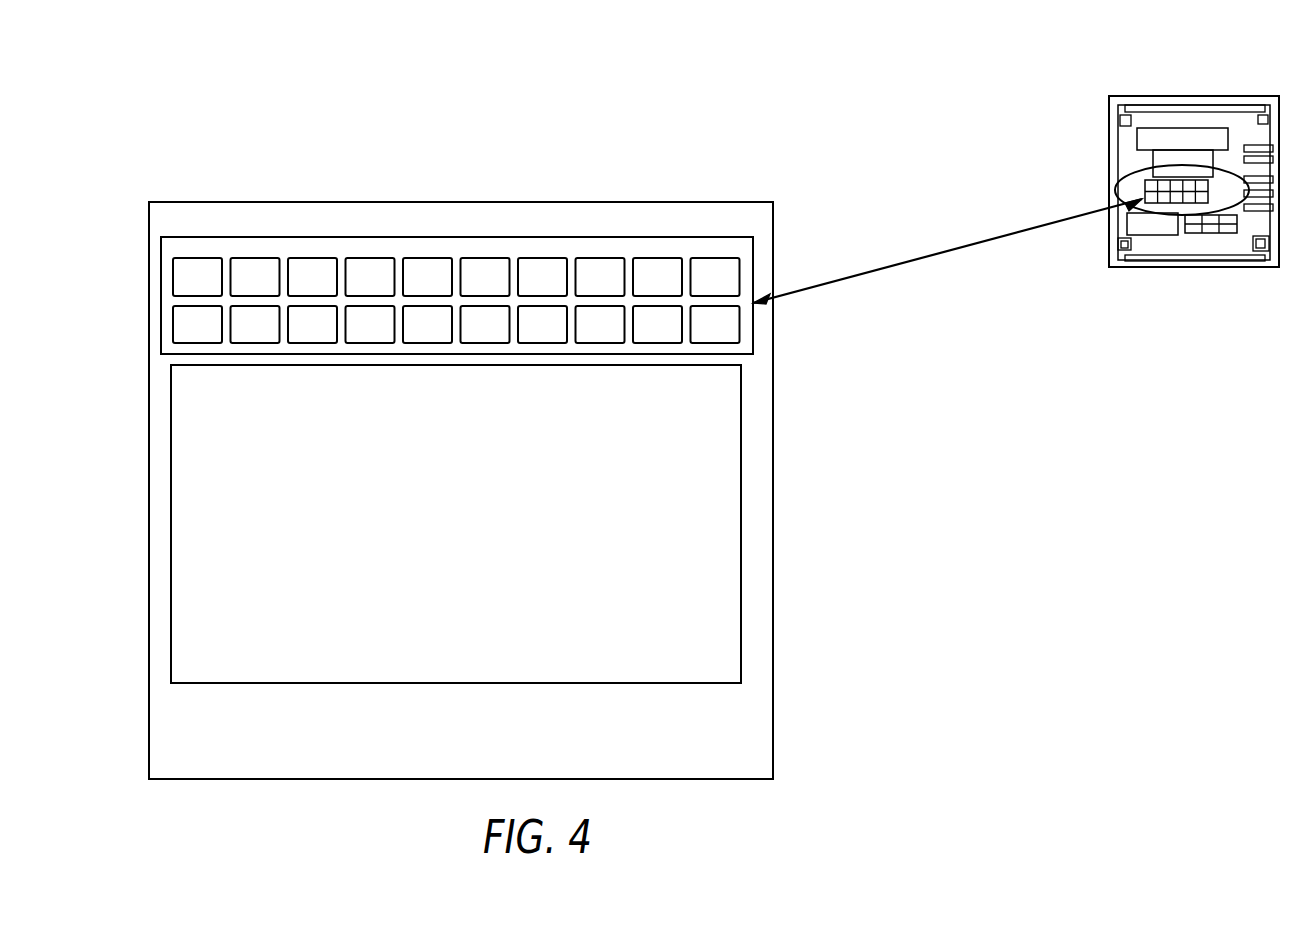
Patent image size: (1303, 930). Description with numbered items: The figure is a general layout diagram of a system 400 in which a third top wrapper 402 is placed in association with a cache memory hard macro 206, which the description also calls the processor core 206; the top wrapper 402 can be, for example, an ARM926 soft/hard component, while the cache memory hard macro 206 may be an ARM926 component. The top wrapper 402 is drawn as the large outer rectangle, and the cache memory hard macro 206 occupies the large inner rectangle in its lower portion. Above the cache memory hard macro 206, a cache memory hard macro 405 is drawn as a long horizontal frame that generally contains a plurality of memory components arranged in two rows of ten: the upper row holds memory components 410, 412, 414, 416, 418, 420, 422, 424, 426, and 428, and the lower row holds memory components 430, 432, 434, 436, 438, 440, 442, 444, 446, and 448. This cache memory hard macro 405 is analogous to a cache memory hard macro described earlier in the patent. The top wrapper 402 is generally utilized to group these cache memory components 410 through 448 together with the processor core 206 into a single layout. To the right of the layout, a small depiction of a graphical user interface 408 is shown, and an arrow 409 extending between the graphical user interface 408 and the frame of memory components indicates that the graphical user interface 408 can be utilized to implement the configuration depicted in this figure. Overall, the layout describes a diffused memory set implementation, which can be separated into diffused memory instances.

The system 400 is at (839, 80).
The third top wrapper 402 is at (690, 731).
The cache memory hard macro 206 is at (690, 590).
The cache memory hard macro 405 is at (632, 247).
The graphical user interface 408 is at (1148, 96).
The arrow 409 is at (930, 257).
The memory component 410 is at (197, 275).
The memory component 412 is at (255, 275).
The memory component 414 is at (312, 275).
The memory component 416 is at (370, 275).
The memory component 418 is at (427, 275).
The memory component 420 is at (485, 275).
The memory component 422 is at (542, 275).
The memory component 424 is at (600, 275).
The memory component 426 is at (661, 275).
The memory component 428 is at (717, 275).
The memory component 430 is at (197, 322).
The memory component 432 is at (254, 322).
The memory component 434 is at (311, 322).
The memory component 436 is at (369, 322).
The memory component 438 is at (426, 322).
The memory component 440 is at (484, 322).
The memory component 442 is at (541, 322).
The memory component 444 is at (599, 322).
The memory component 446 is at (657, 322).
The memory component 448 is at (714, 322).